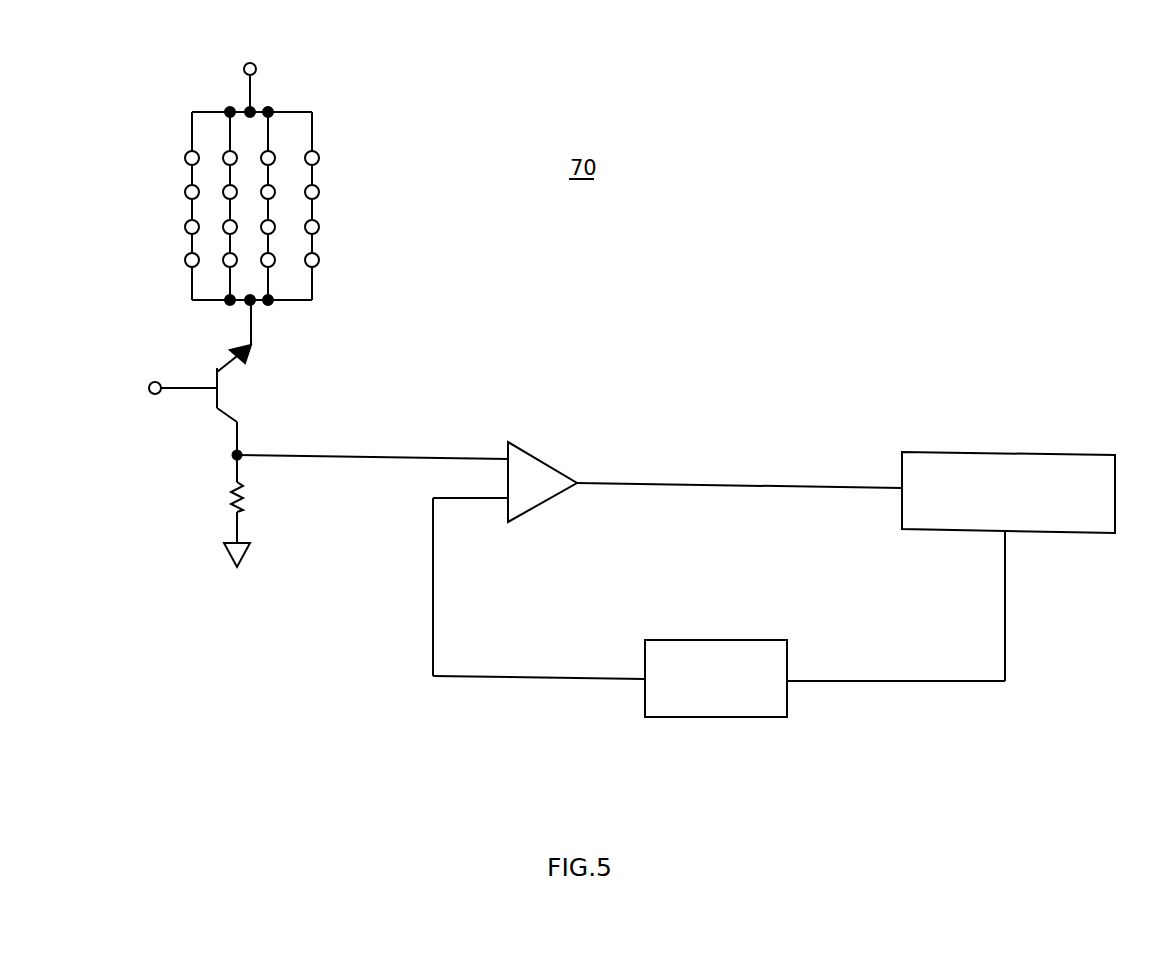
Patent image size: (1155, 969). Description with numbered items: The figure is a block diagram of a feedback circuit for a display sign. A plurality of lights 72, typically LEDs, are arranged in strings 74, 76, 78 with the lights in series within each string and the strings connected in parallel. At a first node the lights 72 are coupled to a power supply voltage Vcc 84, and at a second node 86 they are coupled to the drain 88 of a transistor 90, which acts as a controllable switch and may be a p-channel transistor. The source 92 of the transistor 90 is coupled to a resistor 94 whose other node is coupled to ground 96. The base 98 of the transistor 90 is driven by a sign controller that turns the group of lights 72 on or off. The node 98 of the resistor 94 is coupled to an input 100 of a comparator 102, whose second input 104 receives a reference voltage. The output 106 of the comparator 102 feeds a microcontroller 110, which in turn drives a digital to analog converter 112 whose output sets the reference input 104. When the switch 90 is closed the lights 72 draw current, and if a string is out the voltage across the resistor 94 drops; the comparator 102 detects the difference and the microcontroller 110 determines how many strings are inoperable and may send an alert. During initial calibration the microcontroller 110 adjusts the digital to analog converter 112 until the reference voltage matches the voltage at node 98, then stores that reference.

The lights 72 is at (187, 153).
The string of lights 74 is at (192, 112).
The string of lights 76 is at (230, 110).
The string of lights 78 is at (268, 110).
The power supply voltage Vcc 84 is at (251, 62).
The second node 86 is at (254, 306).
The drain 88 is at (242, 358).
The transistor 90 is at (243, 393).
The source 92 is at (240, 438).
The resistor 94 is at (243, 501).
The ground 96 is at (248, 551).
The base / first node of resistor 98 is at (148, 383).
The input of comparator 100 is at (508, 452).
The comparator 102 is at (540, 458).
The second input / reference voltage 104 is at (508, 505).
The output of comparator 106 is at (590, 483).
The microcontroller 110 is at (950, 452).
The digital to analog converter 112 is at (698, 640).